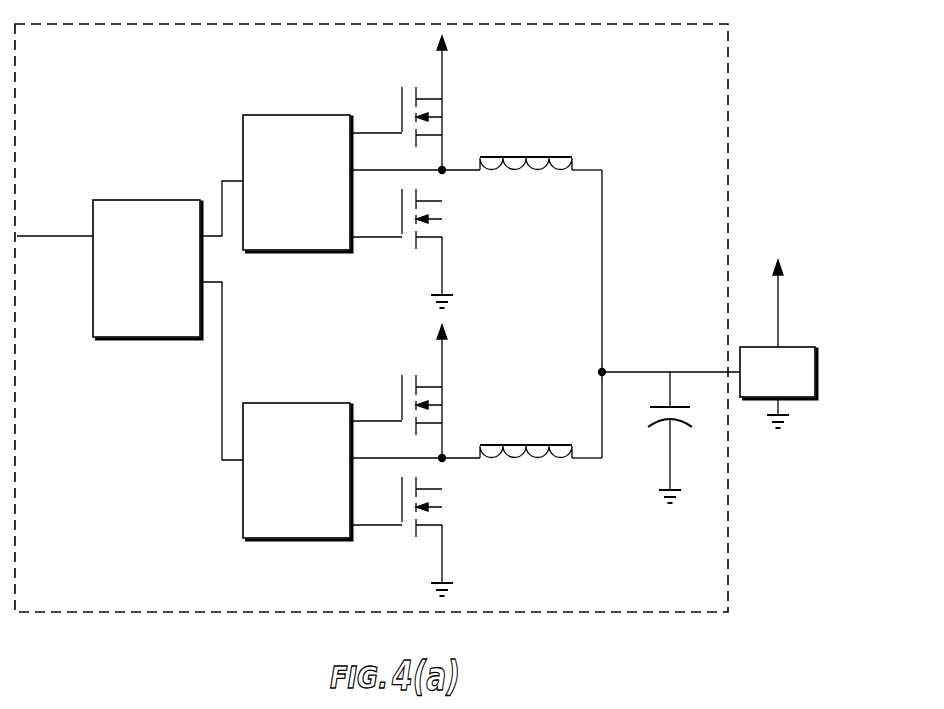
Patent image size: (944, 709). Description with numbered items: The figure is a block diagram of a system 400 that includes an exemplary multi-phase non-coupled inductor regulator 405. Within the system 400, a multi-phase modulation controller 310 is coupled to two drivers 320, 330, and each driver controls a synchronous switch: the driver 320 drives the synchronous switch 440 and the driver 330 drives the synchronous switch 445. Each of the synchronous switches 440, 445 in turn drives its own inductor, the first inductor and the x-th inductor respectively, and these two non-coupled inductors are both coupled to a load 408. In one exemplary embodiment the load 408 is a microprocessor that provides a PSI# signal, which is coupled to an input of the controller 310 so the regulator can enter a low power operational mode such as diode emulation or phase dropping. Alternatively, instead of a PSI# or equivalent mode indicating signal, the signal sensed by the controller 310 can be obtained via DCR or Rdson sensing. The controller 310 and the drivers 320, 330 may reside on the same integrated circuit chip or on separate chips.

The system 400 is at (597, 647).
The multi-phase non-coupled inductor regulator 405 is at (138, 614).
The multi-phase modulation controller 310 is at (158, 339).
The driver 320 is at (318, 252).
The driver 330 is at (243, 507).
The synchronous switch 440 is at (453, 140).
The synchronous switch 445 is at (454, 434).
The load 408 is at (800, 347).